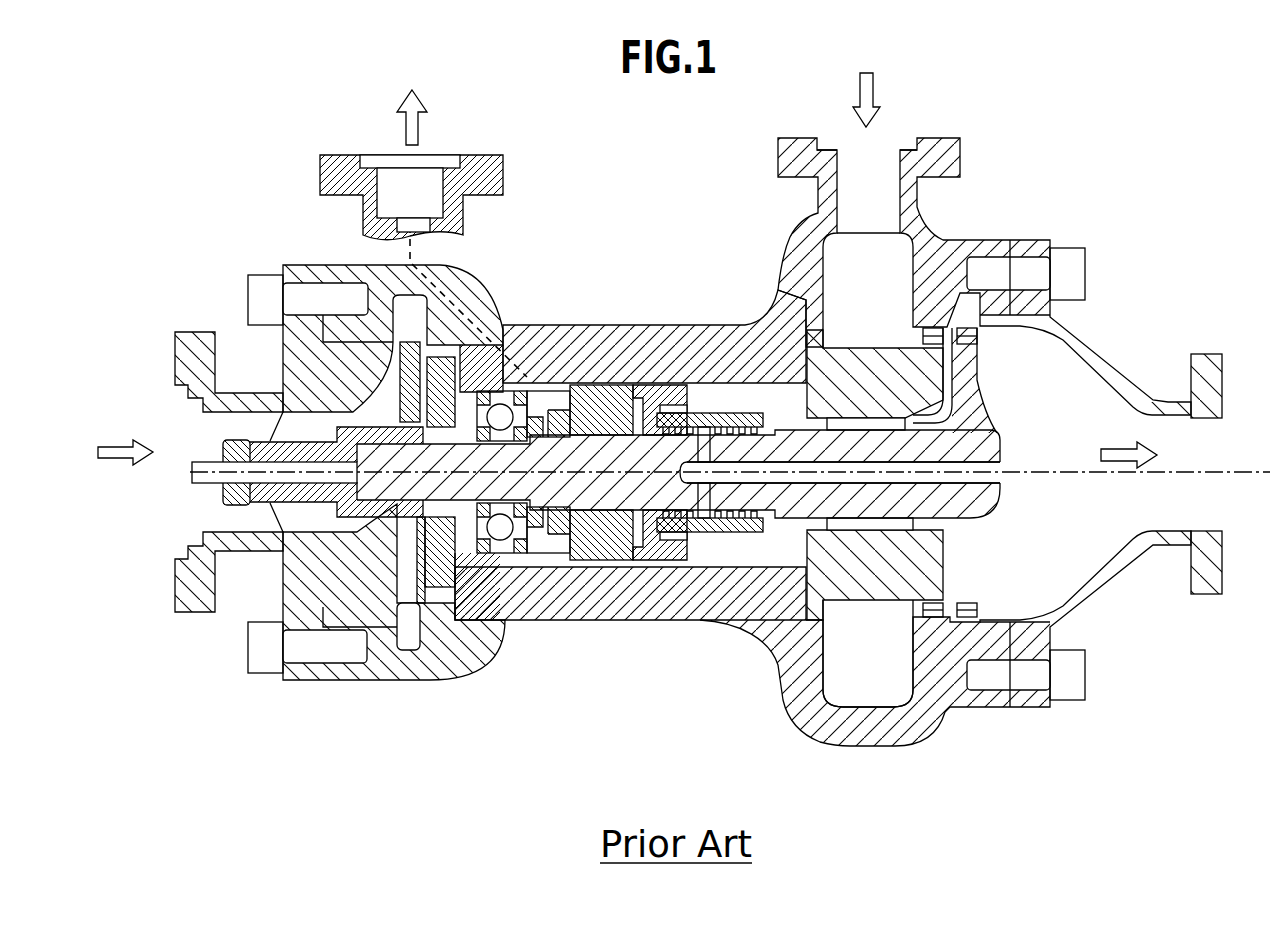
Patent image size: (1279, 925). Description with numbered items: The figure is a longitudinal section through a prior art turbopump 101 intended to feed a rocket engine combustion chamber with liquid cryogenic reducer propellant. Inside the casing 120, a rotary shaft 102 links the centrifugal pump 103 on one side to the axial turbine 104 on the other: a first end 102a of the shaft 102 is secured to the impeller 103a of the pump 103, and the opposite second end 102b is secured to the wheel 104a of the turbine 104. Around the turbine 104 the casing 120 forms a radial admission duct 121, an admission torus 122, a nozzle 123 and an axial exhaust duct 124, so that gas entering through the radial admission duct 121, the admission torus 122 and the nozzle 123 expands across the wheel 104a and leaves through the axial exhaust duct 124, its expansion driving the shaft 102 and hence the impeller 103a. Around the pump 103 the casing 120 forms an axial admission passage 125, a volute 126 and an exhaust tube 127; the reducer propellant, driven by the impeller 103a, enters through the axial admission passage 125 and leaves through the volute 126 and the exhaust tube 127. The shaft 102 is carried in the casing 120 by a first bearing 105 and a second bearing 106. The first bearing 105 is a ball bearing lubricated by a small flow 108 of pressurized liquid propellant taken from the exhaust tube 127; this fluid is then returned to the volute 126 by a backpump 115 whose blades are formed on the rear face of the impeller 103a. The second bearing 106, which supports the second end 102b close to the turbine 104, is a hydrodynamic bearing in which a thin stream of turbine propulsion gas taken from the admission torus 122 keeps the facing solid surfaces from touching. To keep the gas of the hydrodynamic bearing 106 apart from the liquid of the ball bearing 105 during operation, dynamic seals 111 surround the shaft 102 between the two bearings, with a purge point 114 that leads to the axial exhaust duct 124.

The turbopump 101 is at (208, 668).
The rotary shaft 102 is at (617, 500).
The first end of the shaft 102a is at (452, 590).
The second end of the shaft 102b is at (905, 488).
The centrifugal pump 103 is at (310, 355).
The impeller 103a is at (503, 343).
The axial turbine 104 is at (957, 253).
The turbine wheel 104a is at (984, 338).
The first bearing 105 is at (504, 385).
The second bearing 106 is at (877, 532).
The small flow of liquid propellant 108 is at (418, 257).
The dynamic seals 111 is at (703, 520).
The purge point 114 is at (702, 417).
The backpump 115 is at (413, 566).
The casing 120 is at (670, 325).
The radial admission duct 121 is at (878, 172).
The admission torus 122 is at (880, 698).
The nozzle 123 is at (912, 333).
The axial exhaust duct 124 is at (1187, 446).
The axial admission passage 125 is at (207, 436).
The volute 126 is at (409, 645).
The exhaust tube 127 is at (437, 193).